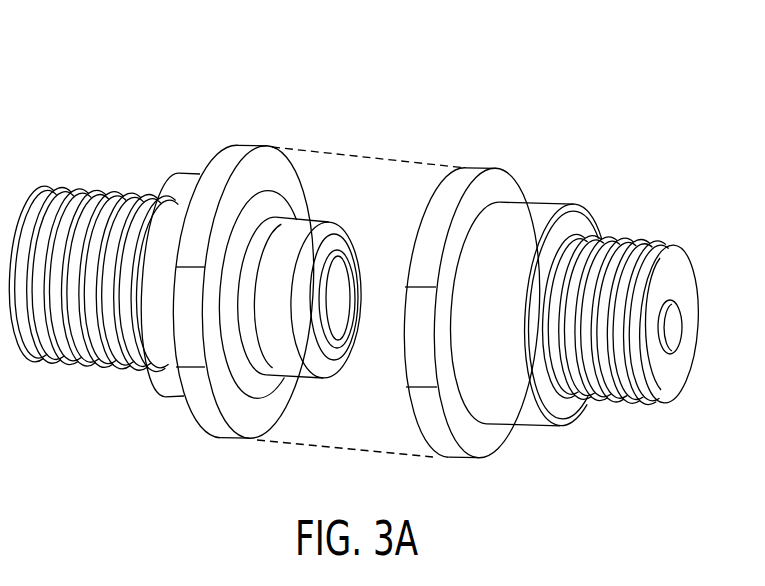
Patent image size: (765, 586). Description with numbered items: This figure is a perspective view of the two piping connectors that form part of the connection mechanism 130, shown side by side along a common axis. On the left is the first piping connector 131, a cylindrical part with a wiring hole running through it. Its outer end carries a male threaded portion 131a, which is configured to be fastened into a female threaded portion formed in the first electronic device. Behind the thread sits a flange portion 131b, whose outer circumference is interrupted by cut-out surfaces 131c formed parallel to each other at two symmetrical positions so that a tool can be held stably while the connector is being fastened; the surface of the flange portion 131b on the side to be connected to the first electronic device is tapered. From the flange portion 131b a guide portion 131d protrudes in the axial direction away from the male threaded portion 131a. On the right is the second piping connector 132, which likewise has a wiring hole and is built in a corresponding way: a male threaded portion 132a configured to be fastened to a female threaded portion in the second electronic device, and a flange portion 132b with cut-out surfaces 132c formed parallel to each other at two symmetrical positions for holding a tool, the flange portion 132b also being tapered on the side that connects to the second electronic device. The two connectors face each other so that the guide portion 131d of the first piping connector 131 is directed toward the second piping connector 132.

The connection mechanism 130 is at (79, 50).
The first piping connector 131 is at (143, 438).
The male threaded portion 131a is at (85, 192).
The flange portion 131b is at (236, 150).
The cut-out surfaces 131c is at (192, 340).
The guide portion 131d is at (307, 228).
The second piping connector 132 is at (536, 487).
The male threaded portion 132a is at (635, 237).
The flange portion 132b is at (468, 173).
The cut-out surfaces 132c is at (425, 355).